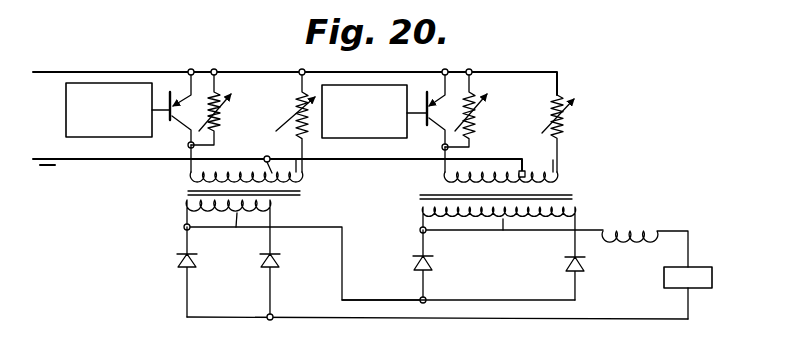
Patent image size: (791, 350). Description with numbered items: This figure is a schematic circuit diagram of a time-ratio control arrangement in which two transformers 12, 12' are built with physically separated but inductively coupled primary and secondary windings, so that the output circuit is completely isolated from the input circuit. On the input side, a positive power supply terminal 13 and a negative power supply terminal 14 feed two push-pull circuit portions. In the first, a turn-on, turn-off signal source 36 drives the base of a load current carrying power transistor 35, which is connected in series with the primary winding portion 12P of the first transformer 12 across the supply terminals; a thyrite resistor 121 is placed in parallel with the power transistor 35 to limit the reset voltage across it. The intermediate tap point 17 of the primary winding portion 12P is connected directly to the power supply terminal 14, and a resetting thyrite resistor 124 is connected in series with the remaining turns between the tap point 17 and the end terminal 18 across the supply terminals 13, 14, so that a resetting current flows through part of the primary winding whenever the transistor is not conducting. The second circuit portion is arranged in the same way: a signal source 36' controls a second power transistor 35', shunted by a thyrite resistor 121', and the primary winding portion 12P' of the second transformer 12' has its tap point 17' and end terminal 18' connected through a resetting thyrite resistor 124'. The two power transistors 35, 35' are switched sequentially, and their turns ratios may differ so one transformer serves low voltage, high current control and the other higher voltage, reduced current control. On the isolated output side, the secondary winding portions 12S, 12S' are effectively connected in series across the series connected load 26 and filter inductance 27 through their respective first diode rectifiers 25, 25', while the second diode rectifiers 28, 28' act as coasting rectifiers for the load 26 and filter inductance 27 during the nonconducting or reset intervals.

The power supply terminal 13 is at (96, 72).
The power supply terminal 14 is at (114, 160).
The source of turn-on, turn-off signals 36 is at (94, 110).
The power transistor 35 is at (172, 111).
The thyrite resistor 121 is at (227, 107).
The thyrite resistor 124 is at (289, 120).
The transformer 12 is at (226, 193).
The primary winding portion 12P is at (246, 162).
The intermediate tap point 17 is at (279, 157).
The end terminal 18 is at (313, 173).
The secondary winding portion 12S is at (303, 258).
The second diode rectifier 28 is at (167, 272).
The first diode rectifier 25 is at (437, 287).
The turn-on turn-off signal source 36' is at (364, 122).
The power transistor 35' is at (426, 114).
The thyrite resistor 121' is at (483, 108).
The thyrite resistor 124' is at (575, 133).
The second two winding transformer 12' is at (480, 199).
The primary winding portion 12P' is at (501, 162).
The intermediate tap point 17' is at (535, 162).
The end terminal 18' is at (575, 172).
The secondary winding portion 12S' is at (511, 253).
The second diode rectifier 28' is at (439, 266).
The first diode rectifier 25' is at (479, 278).
The filter inductance 27 is at (641, 225).
The load 26 is at (664, 283).